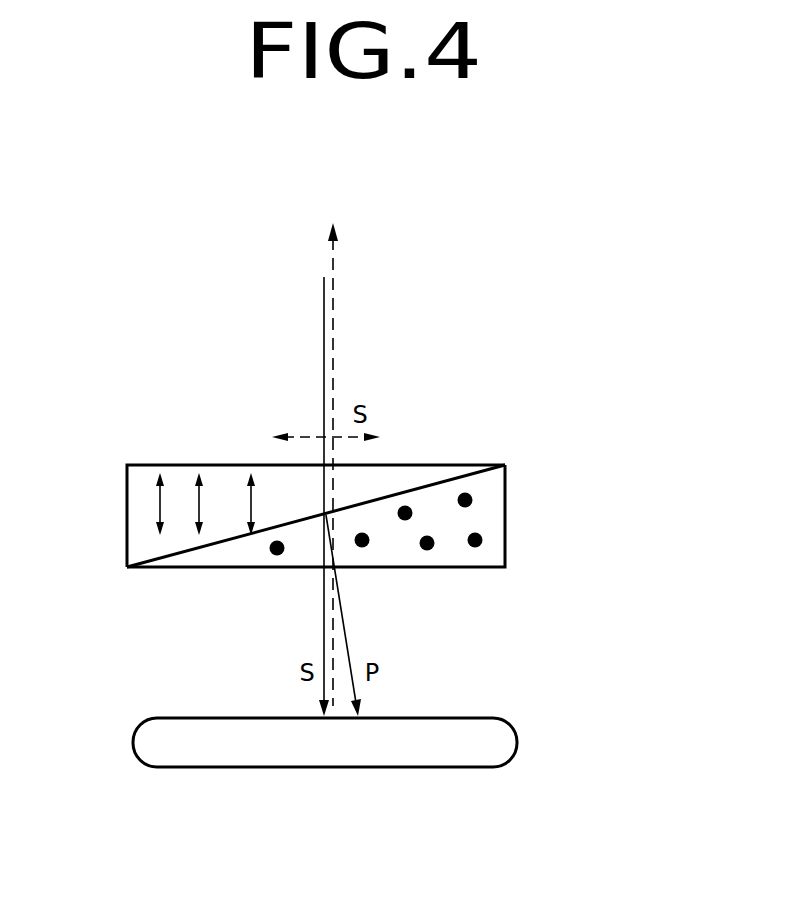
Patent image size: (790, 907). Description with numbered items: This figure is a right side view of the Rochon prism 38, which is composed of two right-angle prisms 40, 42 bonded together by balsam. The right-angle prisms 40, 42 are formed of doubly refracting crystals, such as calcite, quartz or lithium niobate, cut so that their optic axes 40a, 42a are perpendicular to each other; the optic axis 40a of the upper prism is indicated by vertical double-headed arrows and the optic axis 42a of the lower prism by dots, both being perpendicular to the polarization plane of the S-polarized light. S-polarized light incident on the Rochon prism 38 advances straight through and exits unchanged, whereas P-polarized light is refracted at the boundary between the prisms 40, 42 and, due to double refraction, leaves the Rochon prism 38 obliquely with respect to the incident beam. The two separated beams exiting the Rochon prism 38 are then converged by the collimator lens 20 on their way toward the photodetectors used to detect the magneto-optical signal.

The collimator lens 20 is at (353, 758).
The Rochon prism 38 is at (509, 466).
The right-angle prism 40 is at (223, 467).
The optic axis 40a is at (157, 505).
The right-angle prism 42 is at (460, 566).
The optic axis 42a is at (482, 535).